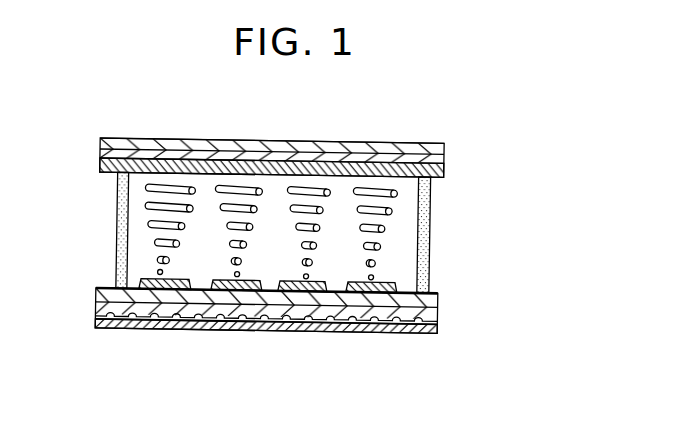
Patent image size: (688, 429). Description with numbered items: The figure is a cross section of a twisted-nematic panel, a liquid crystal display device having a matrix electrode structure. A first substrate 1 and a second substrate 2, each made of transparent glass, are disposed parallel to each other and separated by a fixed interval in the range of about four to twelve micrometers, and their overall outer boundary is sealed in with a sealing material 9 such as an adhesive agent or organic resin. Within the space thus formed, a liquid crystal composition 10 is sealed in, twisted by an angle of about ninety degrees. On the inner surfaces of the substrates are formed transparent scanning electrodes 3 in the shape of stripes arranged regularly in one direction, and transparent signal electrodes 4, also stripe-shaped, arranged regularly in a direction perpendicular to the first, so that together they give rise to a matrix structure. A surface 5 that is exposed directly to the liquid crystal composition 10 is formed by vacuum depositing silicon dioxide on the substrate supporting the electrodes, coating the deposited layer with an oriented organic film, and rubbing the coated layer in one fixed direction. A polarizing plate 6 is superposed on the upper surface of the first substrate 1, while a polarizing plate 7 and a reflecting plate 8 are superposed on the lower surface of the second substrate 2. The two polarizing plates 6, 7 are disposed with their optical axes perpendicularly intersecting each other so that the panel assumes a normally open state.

The first substrate 1 is at (432, 160).
The second substrate 2 is at (430, 303).
The scanning electrodes 3 is at (440, 173).
The signal electrodes 4 is at (400, 284).
The surface 5 is at (140, 175).
The polarizing plate 6 is at (377, 141).
The polarizing plate 7 is at (432, 313).
The reflecting plate 8 is at (410, 334).
The sealing material 9 is at (427, 217).
The liquid crystal composition 10 is at (233, 189).